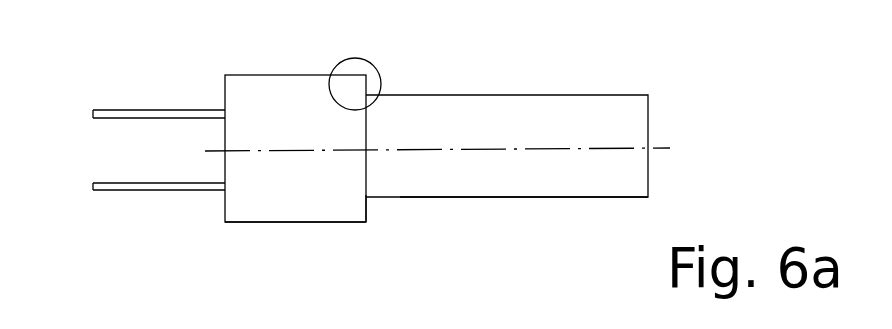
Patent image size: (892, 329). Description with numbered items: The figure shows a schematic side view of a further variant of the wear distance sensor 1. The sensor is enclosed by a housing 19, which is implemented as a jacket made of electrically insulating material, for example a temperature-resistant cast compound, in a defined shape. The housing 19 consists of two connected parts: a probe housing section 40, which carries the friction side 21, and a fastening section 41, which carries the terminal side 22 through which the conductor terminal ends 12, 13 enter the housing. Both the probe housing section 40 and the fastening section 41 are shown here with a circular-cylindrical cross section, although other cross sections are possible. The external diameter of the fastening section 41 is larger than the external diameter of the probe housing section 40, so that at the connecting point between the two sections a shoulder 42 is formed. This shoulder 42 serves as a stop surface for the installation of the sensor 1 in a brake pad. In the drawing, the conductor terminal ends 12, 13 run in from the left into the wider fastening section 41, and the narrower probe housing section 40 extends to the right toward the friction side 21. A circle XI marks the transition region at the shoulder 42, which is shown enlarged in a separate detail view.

The wear distance sensor 1 is at (128, 267).
The conductor terminal end 12 is at (93, 190).
The conductor terminal end 13 is at (93, 110).
The housing 19 is at (324, 228).
The friction side 21 is at (654, 119).
The terminal side 22 is at (225, 165).
The probe housing section 40 is at (495, 187).
The fastening section 41 is at (263, 210).
The shoulder 42 is at (372, 212).
The circle XI is at (381, 76).